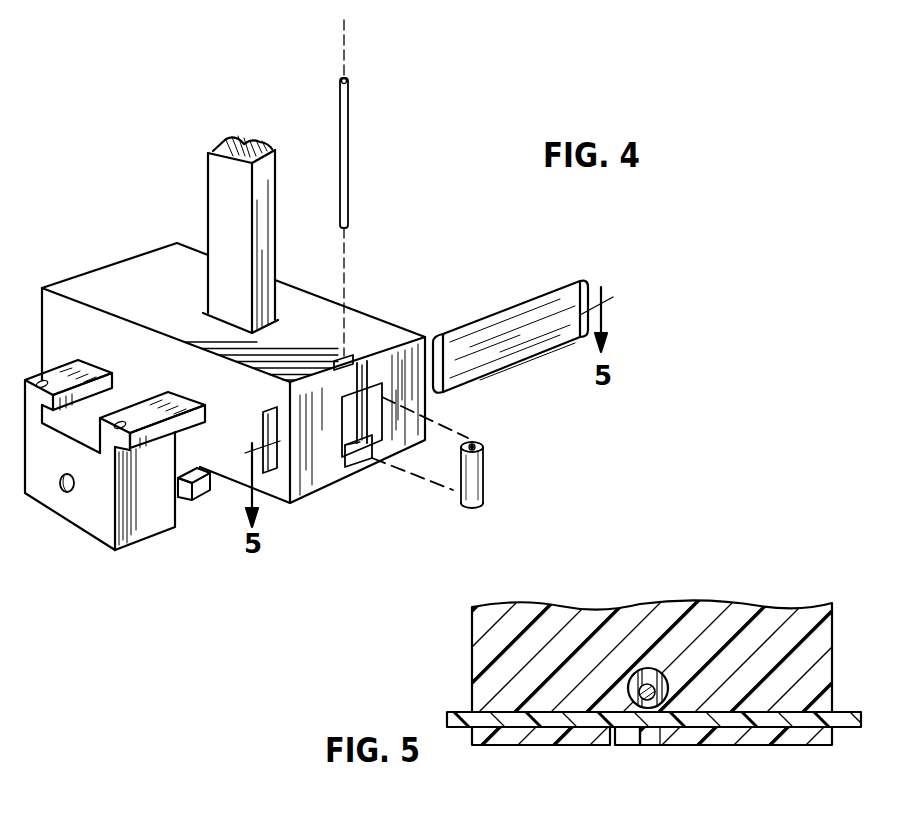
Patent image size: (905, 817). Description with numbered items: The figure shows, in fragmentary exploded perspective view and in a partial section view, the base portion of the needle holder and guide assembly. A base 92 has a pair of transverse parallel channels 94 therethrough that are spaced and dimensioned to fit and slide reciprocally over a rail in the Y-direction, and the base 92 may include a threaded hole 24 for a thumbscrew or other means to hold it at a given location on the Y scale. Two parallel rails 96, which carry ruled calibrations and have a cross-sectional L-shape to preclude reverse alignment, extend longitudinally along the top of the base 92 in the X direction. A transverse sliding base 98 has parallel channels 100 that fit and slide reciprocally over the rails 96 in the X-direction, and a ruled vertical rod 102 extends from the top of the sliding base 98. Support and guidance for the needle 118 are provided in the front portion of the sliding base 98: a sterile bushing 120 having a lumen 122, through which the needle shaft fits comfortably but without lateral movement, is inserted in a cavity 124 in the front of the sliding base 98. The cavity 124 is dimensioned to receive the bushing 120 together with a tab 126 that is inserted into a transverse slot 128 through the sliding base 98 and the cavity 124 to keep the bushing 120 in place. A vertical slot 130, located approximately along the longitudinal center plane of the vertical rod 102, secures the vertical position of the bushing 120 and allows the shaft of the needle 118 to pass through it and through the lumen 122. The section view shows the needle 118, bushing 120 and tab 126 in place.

In FIG. 4, the threaded hole 24 is at (72, 495).
In FIG. 4, the base 92 is at (108, 530).
In FIG. 4, the channels 94 is at (185, 508).
In FIG. 4, the rails 96 is at (42, 383).
In FIG. 4, the transverse sliding base 98 is at (388, 330).
In FIG. 5, the transverse sliding base 98 is at (549, 672).
In FIG. 4, the channels 100 is at (80, 362).
In FIG. 4, the ruled vertical rod 102 is at (213, 175).
In FIG. 4, the needle 118 is at (350, 110).
In FIG. 4, the bushing 120 is at (473, 470).
In FIG. 5, the bushing 120 is at (633, 713).
In FIG. 4, the lumen 122 is at (472, 447).
In FIG. 5, the lumen 122 is at (653, 730).
In FIG. 4, the cavity 124 is at (318, 492).
In FIG. 5, the cavity 124 is at (628, 702).
In FIG. 4, the tab 126 is at (552, 305).
In FIG. 5, the tab 126 is at (656, 719).
In FIG. 4, the transverse slot 128 is at (305, 505).
In FIG. 4, the vertical slot 130 is at (345, 358).